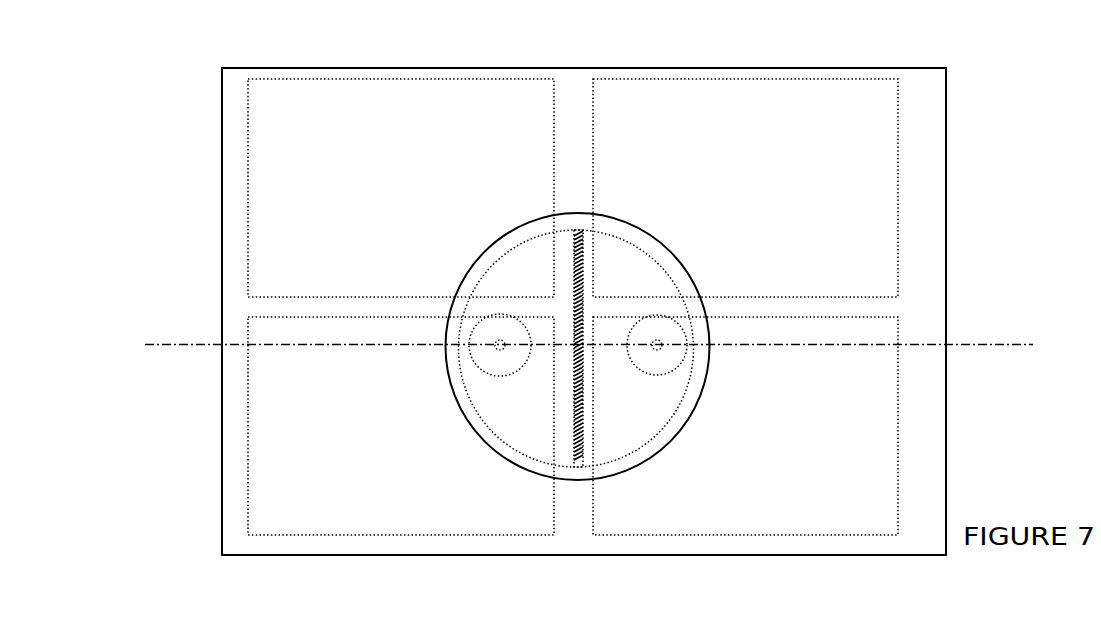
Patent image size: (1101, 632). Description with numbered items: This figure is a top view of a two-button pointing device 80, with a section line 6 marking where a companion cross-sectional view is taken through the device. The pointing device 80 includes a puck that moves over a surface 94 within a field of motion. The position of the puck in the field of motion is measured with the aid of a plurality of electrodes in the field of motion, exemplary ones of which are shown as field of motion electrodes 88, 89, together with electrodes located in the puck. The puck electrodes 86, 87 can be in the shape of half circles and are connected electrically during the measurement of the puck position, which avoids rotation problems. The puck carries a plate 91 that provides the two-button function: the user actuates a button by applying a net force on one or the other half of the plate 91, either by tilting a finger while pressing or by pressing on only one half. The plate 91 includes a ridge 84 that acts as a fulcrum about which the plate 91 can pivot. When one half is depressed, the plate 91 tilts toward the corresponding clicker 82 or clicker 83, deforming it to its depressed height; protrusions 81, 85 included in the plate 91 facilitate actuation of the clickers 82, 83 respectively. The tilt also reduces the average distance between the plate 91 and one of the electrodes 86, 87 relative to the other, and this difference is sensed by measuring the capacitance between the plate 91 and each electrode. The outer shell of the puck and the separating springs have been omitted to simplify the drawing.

The pointing device 80 is at (166, 56).
The surface 94 is at (931, 75).
The puck electrode 86 is at (540, 247).
The puck electrode 87 is at (637, 253).
The field of motion electrode 88 is at (258, 440).
The field of motion electrode 89 is at (885, 415).
The plate 91 is at (690, 288).
The ridge 84 is at (577, 228).
The protrusion 81 is at (497, 347).
The clicker 82 is at (508, 366).
The clicker 83 is at (636, 357).
The protrusion 85 is at (657, 350).
The section line 6- 6 is at (175, 336).